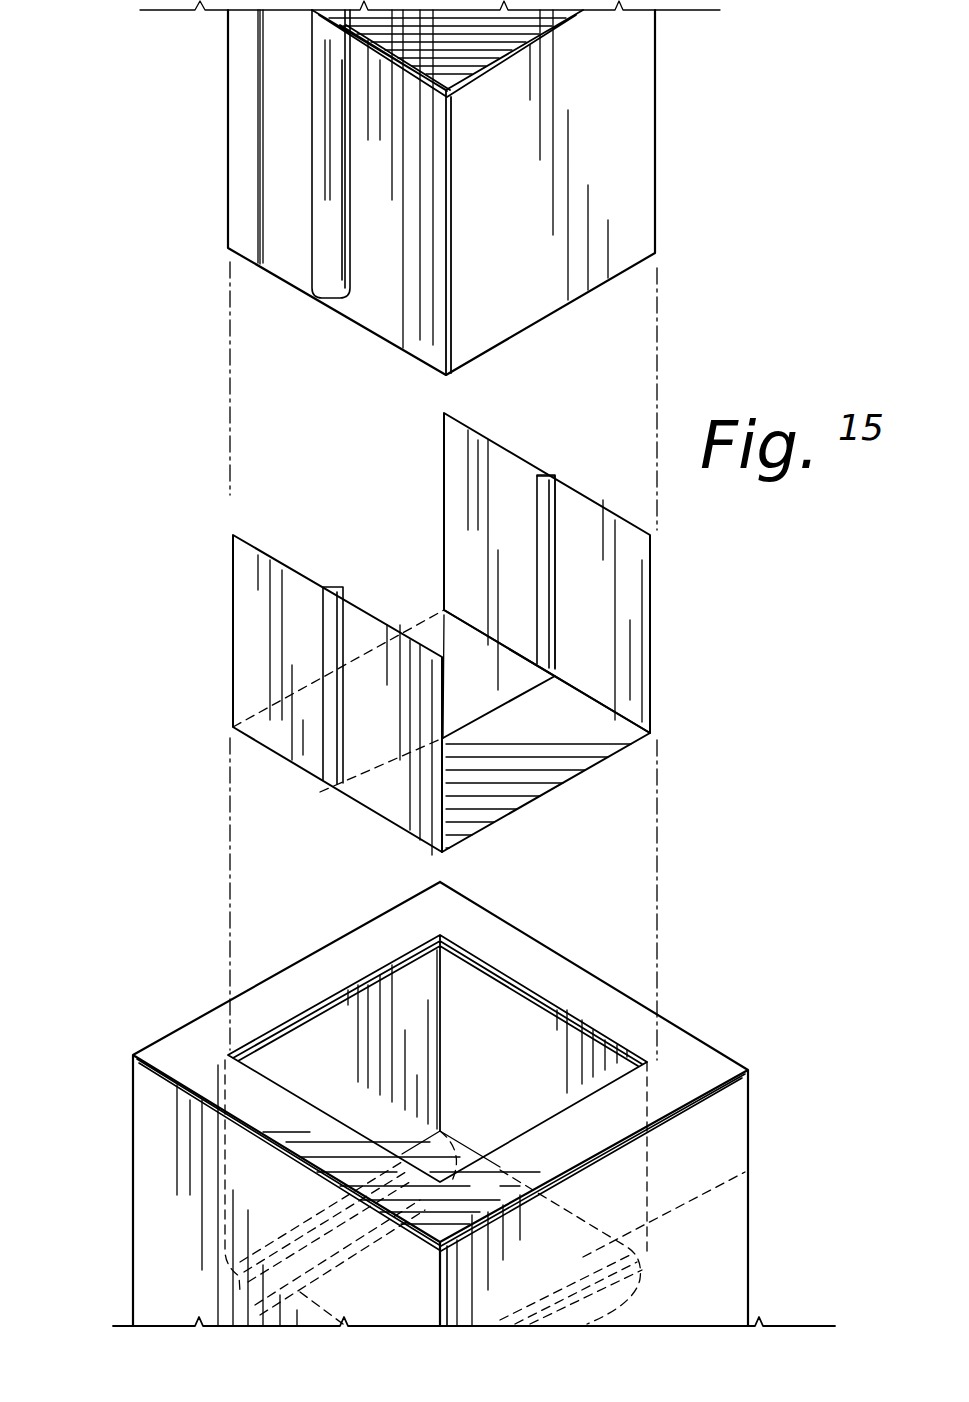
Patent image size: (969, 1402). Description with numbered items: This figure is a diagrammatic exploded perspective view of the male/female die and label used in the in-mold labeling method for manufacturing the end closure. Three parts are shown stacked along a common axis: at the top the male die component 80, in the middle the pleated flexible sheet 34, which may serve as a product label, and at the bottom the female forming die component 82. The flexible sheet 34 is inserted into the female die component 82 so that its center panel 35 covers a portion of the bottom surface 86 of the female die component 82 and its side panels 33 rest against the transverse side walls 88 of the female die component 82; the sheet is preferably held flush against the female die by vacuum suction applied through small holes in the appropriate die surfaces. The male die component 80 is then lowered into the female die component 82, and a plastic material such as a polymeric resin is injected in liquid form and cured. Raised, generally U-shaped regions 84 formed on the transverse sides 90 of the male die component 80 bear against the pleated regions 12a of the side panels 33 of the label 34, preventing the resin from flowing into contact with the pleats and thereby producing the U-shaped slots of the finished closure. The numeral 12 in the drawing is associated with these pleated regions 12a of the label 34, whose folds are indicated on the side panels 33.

The male die component 80 is at (200, 164).
The transverse sides 90 is at (245, 92).
The raised, generally U-shaped regions 84 is at (325, 240).
The pleated flexible sheet 34 is at (706, 660).
The side panels 33 is at (235, 611).
The center panel 35 is at (610, 765).
The slot 12 is at (492, 700).
The pleated regions 12a is at (550, 519).
The female forming die component 82 is at (109, 1217).
The transverse side walls 88 is at (520, 1020).
The bottom surface 86 is at (744, 1172).